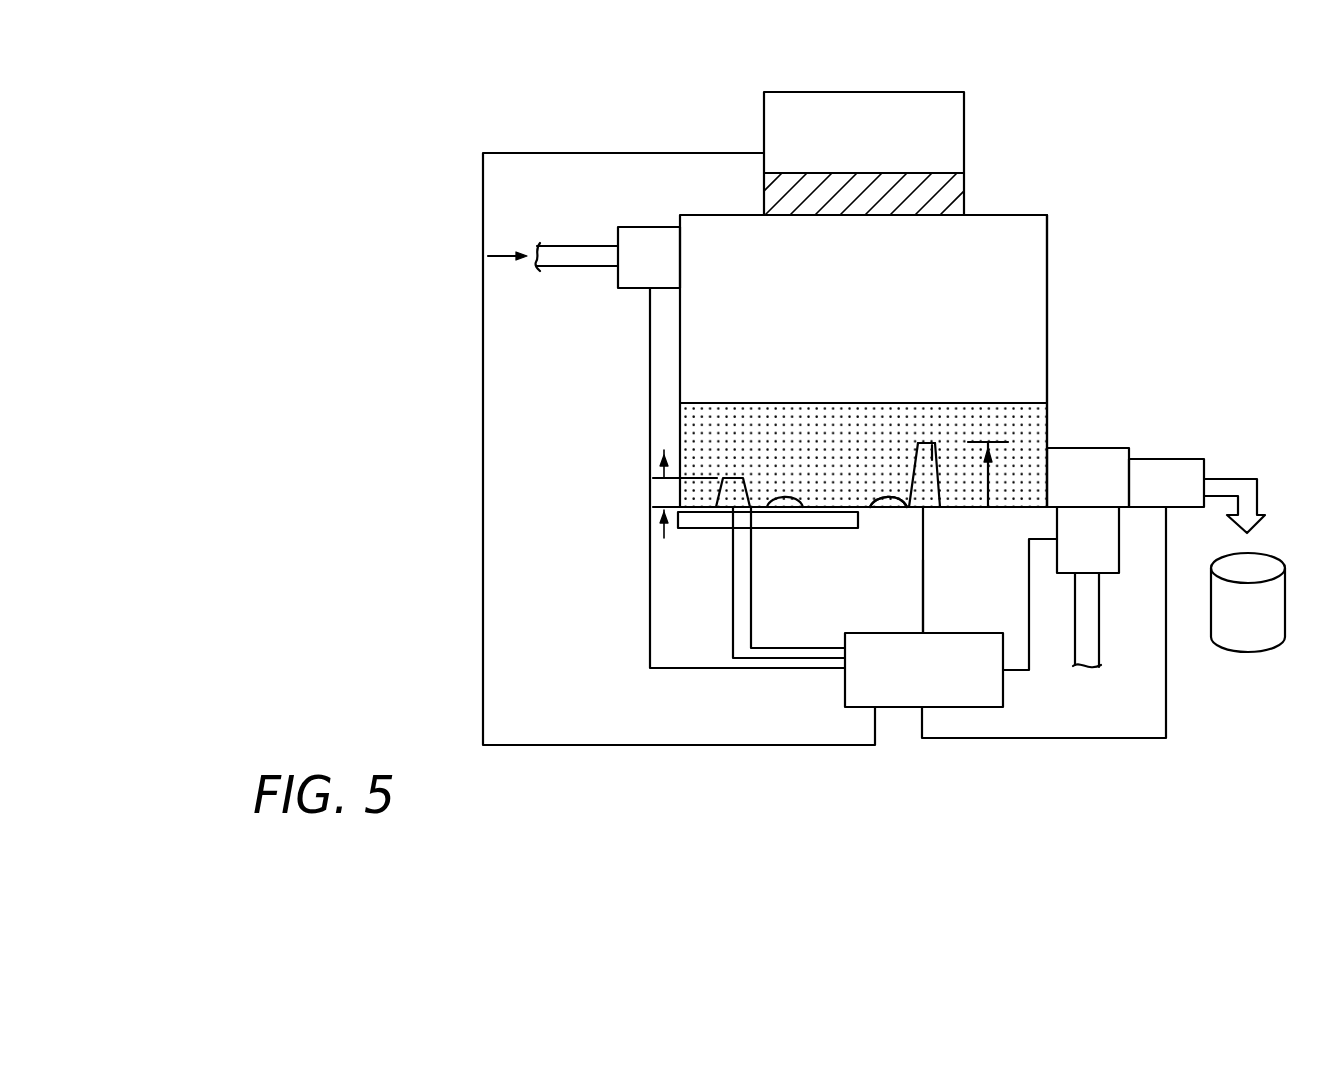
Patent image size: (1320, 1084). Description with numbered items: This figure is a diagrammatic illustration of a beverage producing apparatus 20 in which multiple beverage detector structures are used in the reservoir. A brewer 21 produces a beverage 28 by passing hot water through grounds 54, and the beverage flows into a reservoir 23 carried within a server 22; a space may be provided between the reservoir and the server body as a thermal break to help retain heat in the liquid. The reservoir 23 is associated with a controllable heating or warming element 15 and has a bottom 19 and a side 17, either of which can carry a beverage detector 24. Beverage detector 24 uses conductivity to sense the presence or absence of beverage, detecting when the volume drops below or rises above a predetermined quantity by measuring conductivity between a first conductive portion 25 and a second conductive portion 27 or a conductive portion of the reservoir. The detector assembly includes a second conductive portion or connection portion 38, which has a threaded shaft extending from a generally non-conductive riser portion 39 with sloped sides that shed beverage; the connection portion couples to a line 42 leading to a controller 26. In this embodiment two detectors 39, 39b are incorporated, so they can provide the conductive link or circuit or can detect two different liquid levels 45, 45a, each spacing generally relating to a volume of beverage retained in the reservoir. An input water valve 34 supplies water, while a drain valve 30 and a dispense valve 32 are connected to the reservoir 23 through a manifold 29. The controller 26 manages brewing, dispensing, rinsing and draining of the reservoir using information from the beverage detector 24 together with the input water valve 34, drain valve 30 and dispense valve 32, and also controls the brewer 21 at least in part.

The beverage producing apparatus 20 is at (1160, 162).
The brewer 21 is at (764, 130).
The grounds 54 is at (965, 190).
The reservoir 23 is at (1007, 268).
The server 22 is at (1048, 358).
The beverage 28 is at (830, 425).
The input water valve 34 is at (637, 236).
The side 17 is at (678, 363).
The heating element 15 is at (708, 530).
The detector 39b is at (752, 500).
The liquid level 45a is at (655, 455).
The second conductive portion 27 is at (772, 507).
The bottom 19 is at (873, 510).
The second conductive portion 38 is at (925, 507).
The first conductive portion 25 is at (918, 443).
The riser portion 39 is at (932, 462).
The beverage detector 24 is at (943, 508).
The line 42 is at (923, 617).
The dimension 45 is at (992, 470).
The manifold 29 is at (1108, 458).
The dispense valve 32 is at (1167, 470).
The drain valve 30 is at (1110, 562).
The controller 26 is at (907, 695).